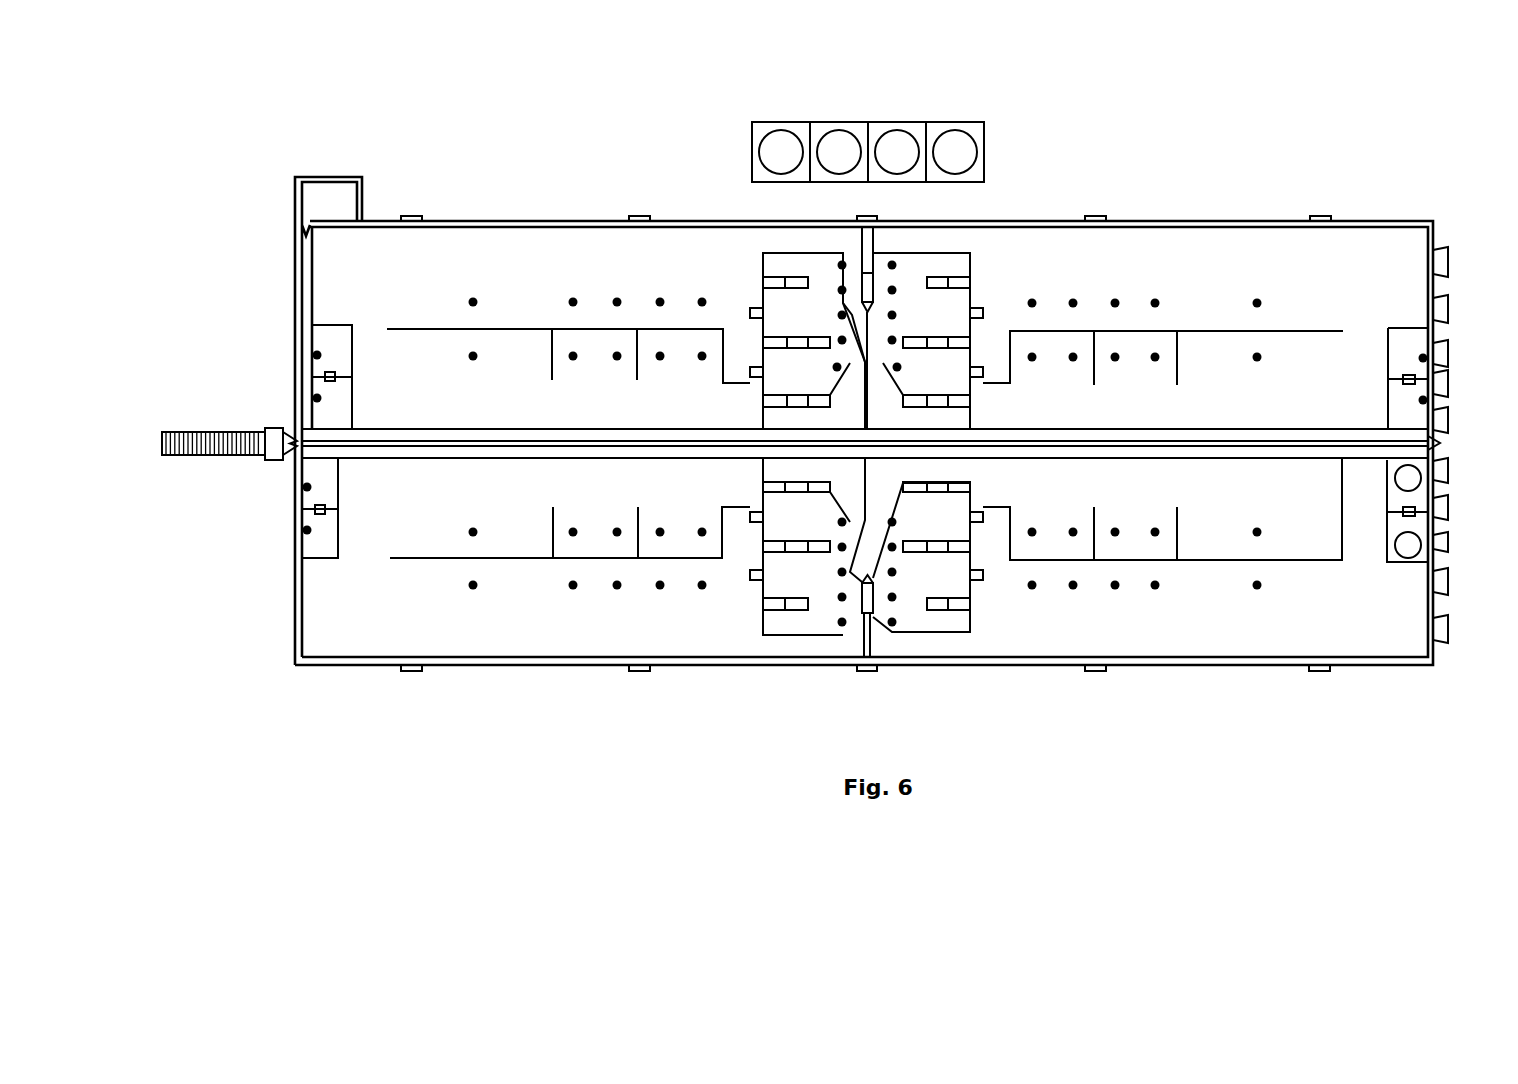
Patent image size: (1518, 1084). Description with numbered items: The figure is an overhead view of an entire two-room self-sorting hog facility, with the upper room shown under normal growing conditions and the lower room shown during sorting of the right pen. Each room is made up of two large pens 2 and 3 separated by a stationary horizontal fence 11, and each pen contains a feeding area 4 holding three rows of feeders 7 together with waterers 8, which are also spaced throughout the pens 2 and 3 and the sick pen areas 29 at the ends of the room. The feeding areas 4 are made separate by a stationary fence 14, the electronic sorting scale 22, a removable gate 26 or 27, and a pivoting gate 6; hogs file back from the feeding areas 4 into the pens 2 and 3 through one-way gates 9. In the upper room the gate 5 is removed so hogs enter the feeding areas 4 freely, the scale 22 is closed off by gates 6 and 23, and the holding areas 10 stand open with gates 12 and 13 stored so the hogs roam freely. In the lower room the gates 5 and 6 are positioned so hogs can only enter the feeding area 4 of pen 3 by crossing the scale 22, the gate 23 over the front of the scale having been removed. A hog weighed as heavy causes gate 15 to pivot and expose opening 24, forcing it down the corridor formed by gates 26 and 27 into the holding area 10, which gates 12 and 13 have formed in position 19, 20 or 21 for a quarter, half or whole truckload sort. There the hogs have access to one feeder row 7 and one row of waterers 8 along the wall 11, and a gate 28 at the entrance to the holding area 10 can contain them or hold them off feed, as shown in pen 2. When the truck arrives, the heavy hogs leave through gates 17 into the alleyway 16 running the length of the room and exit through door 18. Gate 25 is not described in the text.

The pen 2 is at (634, 262).
The pen 3 is at (1101, 262).
The feeding area 4 is at (783, 311).
The gate 5 is at (867, 637).
The pivoting gate 6 is at (860, 240).
The feeders 7 is at (780, 283).
The waterers 8 is at (317, 398).
The one-way gates 9 is at (752, 372).
The holding area 10 is at (581, 411).
The horizontal fence 11 is at (500, 329).
The gate 12 is at (638, 358).
The gate 13 is at (552, 358).
The stationary fence 14 is at (868, 420).
The gate 15 is at (875, 285).
The alleyway 16 is at (458, 450).
The gates 17 is at (512, 429).
The door 18 is at (283, 430).
The position 19 is at (1094, 388).
The position 20 is at (1177, 388).
The position 21 is at (1343, 373).
The electronic sorting scale 22 is at (878, 275).
The gate 23 is at (872, 272).
The opening 24 is at (852, 307).
The sorting gate 25 is at (880, 312).
The removable gate 26 is at (890, 318).
The removable gate 27 is at (845, 318).
The gate 28 is at (763, 422).
The sick pen areas 29 is at (340, 325).